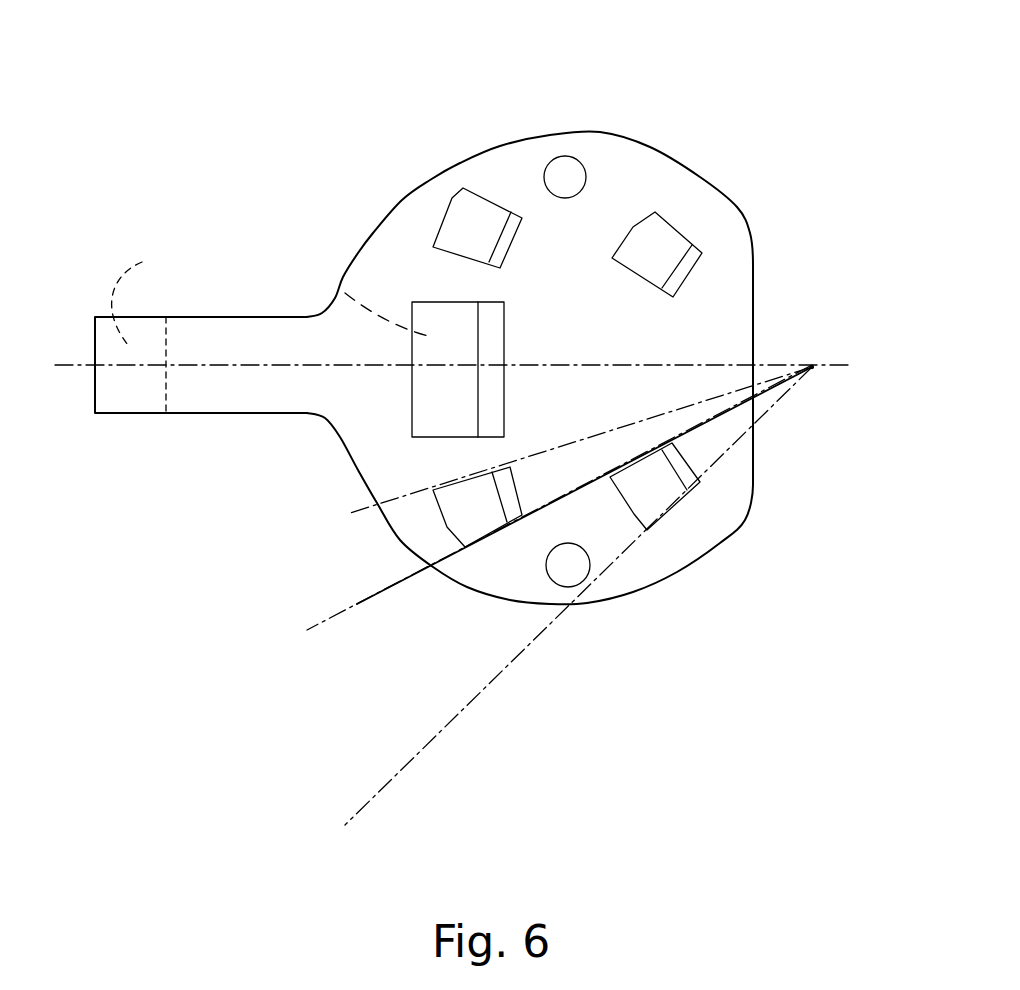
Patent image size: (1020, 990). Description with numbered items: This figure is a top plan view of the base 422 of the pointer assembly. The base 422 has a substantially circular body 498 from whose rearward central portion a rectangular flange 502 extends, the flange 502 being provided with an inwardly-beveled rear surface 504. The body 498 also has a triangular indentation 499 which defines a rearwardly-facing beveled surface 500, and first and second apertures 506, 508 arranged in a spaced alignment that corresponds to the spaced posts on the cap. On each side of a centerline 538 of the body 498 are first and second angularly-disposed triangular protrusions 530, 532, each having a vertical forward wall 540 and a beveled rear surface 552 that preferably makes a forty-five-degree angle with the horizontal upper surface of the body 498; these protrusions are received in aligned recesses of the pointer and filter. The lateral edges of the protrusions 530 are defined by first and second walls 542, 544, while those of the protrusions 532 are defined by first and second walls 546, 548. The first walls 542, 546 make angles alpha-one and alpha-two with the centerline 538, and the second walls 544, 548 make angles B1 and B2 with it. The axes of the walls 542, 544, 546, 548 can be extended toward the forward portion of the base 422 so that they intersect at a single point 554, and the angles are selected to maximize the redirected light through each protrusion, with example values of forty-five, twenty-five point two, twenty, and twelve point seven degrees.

The base 422 is at (680, 130).
The body 498 is at (390, 240).
The triangular indentation 499 is at (505, 348).
The beveled surface 500 is at (350, 302).
The rectangular flange 502 is at (202, 333).
The inwardly-beveled rear surface 504 is at (156, 295).
The first aperture 506 is at (577, 573).
The second aperture 508 is at (580, 177).
The first triangular protrusion 530 is at (665, 215).
The second triangular protrusion 532 is at (455, 188).
The centerline 538 is at (60, 365).
The vertical forward wall 540 is at (513, 248).
The first wall 542 is at (695, 250).
The second wall 544 is at (650, 280).
The first wall 546 is at (500, 212).
The second wall 548 is at (476, 263).
The beveled rear surface 552 is at (468, 228).
The single point 554 is at (812, 368).
The angle beta-one B1 is at (370, 587).
The angle beta-two B2 is at (382, 496).